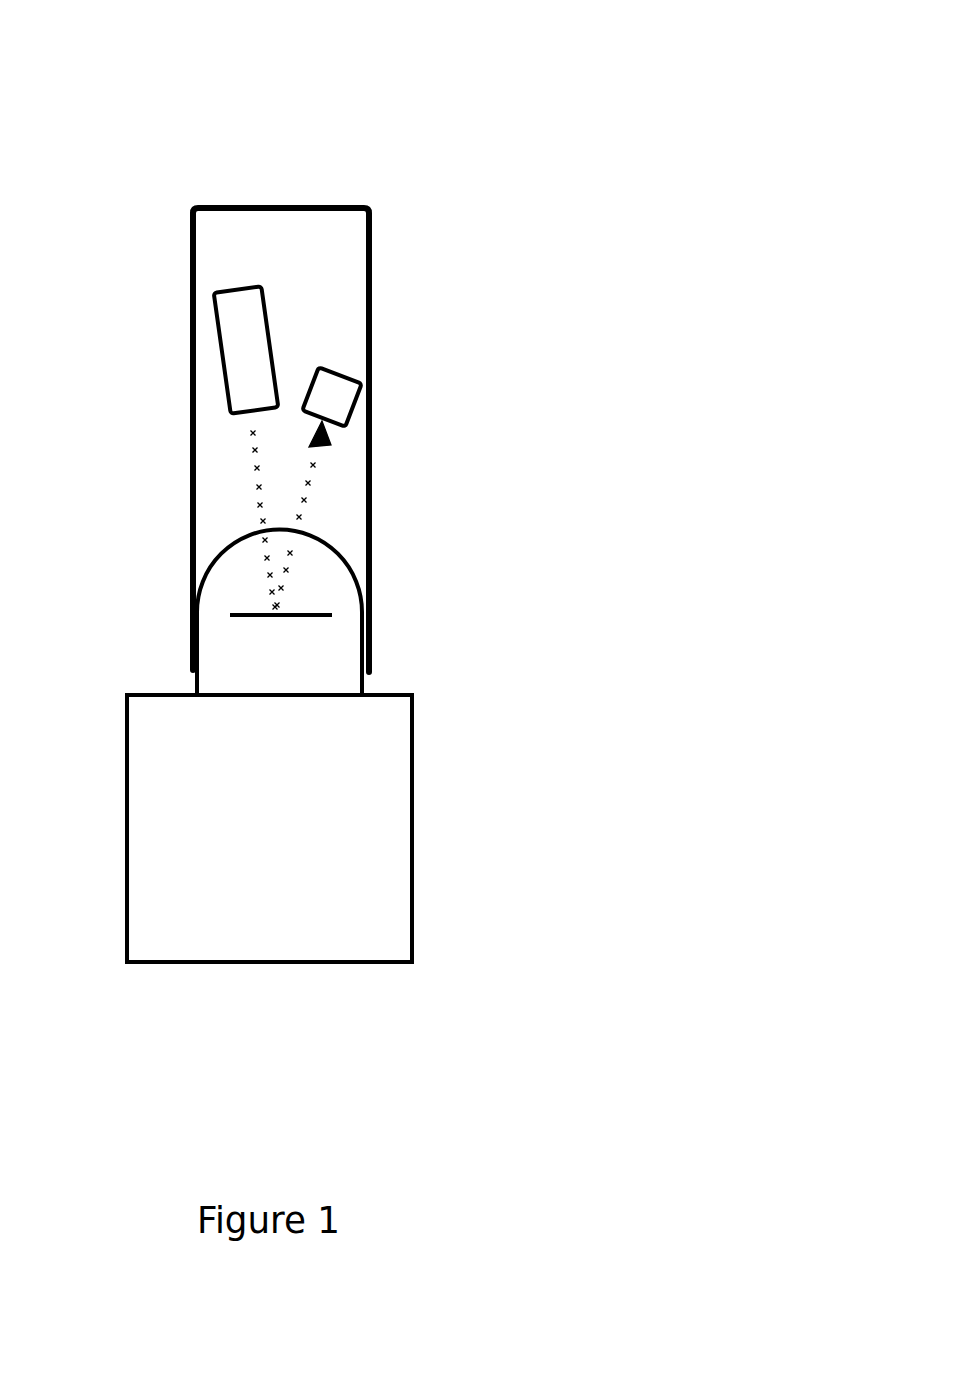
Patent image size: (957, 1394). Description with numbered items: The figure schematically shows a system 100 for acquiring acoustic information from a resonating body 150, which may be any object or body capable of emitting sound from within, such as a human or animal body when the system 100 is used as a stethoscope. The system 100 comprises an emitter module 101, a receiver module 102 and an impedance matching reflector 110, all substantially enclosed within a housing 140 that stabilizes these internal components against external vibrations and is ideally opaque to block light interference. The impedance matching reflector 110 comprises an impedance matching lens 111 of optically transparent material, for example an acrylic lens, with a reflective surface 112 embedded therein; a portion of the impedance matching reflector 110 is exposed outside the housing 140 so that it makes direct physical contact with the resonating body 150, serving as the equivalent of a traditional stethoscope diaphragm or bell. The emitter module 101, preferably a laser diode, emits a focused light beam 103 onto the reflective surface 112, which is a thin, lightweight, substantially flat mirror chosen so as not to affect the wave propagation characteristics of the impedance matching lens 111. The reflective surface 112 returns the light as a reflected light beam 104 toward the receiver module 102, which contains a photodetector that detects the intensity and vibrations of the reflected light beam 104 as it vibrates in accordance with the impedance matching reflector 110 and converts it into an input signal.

The system 100 is at (512, 73).
The housing 140 is at (262, 202).
The emitter module 101 is at (225, 291).
The receiver module 102 is at (358, 388).
The focused light beam 103 is at (260, 472).
The reflected light beam 104 is at (303, 502).
The impedance matching reflector 110 is at (297, 581).
The impedance matching lens 111 is at (217, 555).
The reflective surface 112 is at (318, 608).
The resonating body 150 is at (410, 812).